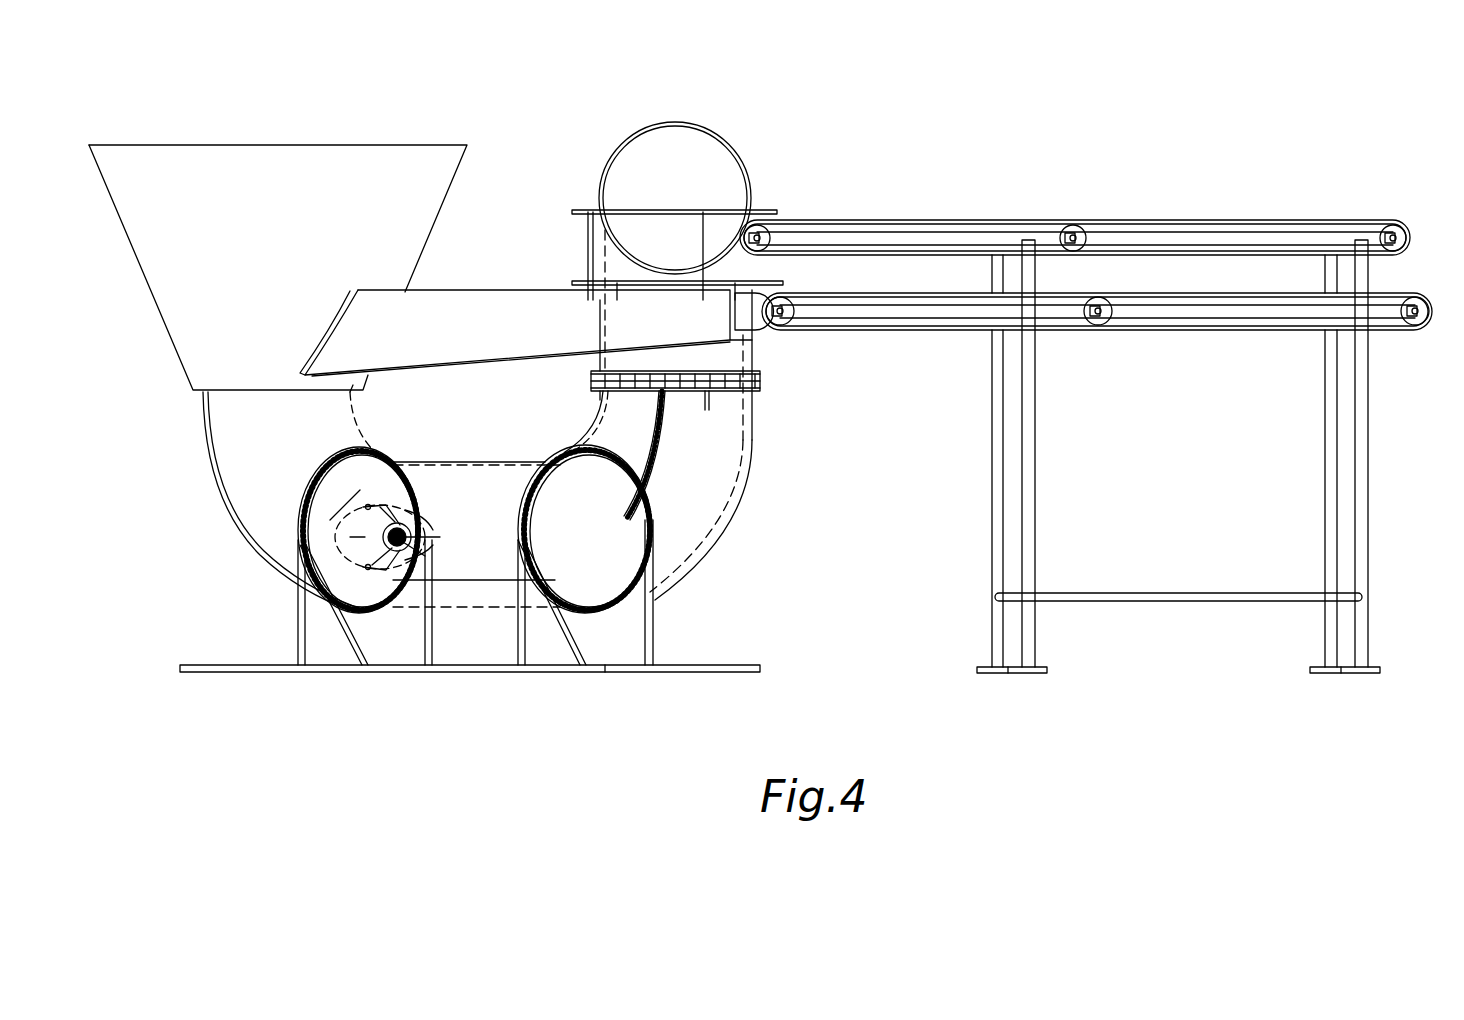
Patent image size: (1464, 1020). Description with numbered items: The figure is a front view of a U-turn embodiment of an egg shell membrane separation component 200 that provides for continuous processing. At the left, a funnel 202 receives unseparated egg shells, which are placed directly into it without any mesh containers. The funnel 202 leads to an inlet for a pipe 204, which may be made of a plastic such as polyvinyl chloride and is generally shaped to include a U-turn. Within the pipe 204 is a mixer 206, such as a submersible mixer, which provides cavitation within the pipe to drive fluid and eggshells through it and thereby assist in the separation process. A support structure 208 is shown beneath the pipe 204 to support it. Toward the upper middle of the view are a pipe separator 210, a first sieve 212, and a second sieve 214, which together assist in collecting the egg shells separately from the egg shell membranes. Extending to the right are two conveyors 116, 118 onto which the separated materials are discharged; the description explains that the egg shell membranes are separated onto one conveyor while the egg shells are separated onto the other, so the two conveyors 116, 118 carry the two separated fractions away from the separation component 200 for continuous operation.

The egg shell membrane separation component 200 is at (873, 70).
The funnel 202 is at (300, 143).
The pipe 204 is at (236, 490).
The mixer 206 is at (302, 590).
The support structure 208 is at (255, 672).
The pipe separator 210 is at (727, 207).
The first sieve 212 is at (582, 210).
The second sieve 214 is at (582, 283).
The upper conveyor 116 is at (1338, 218).
The lower conveyor 118 is at (1387, 293).